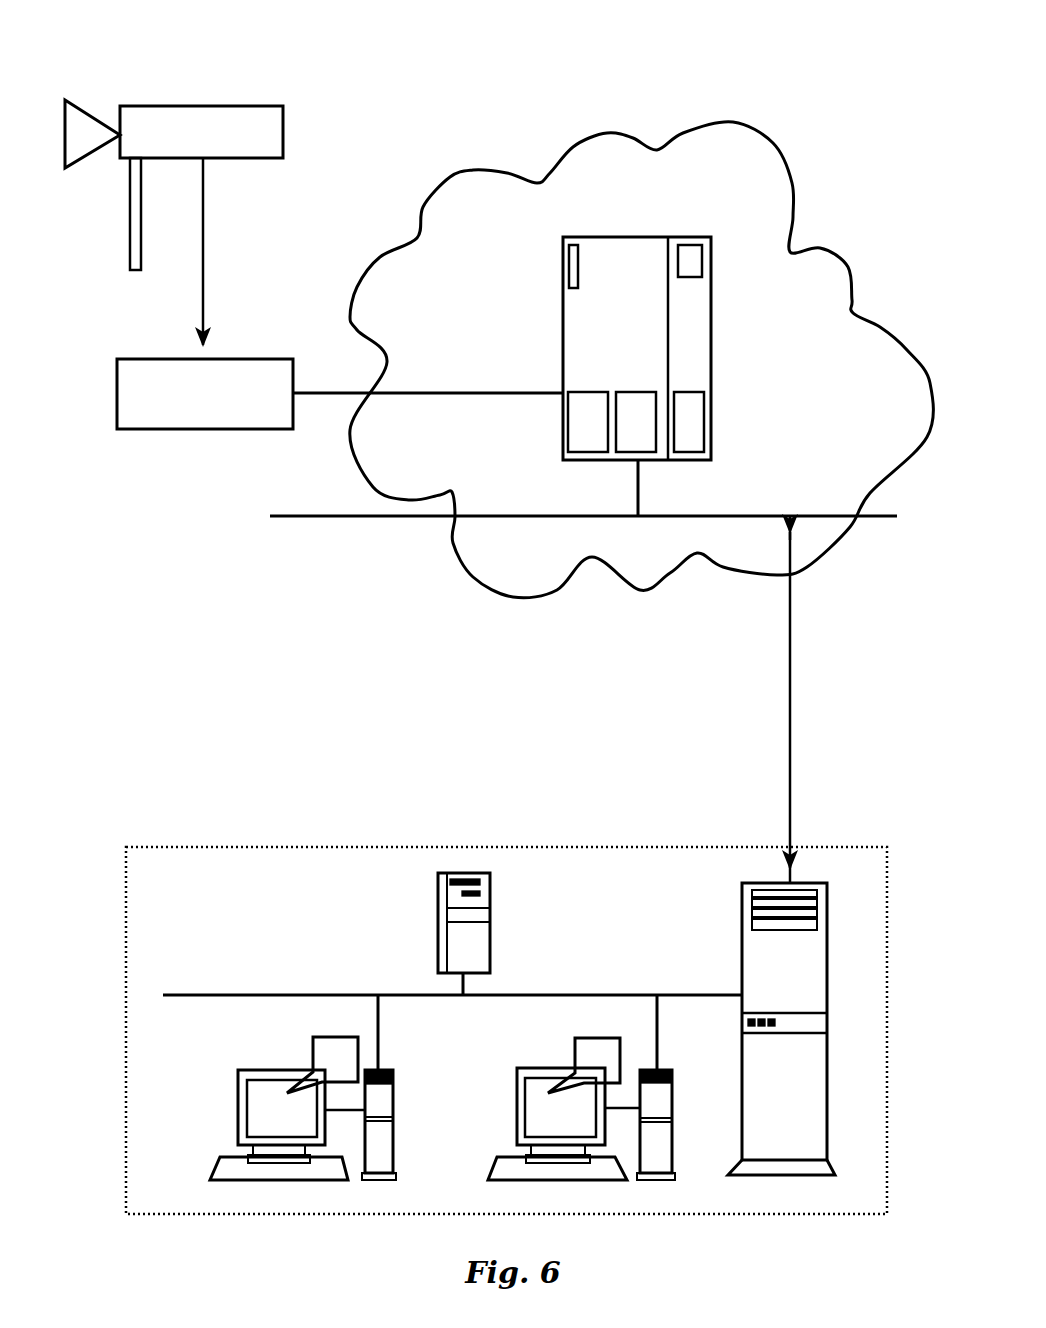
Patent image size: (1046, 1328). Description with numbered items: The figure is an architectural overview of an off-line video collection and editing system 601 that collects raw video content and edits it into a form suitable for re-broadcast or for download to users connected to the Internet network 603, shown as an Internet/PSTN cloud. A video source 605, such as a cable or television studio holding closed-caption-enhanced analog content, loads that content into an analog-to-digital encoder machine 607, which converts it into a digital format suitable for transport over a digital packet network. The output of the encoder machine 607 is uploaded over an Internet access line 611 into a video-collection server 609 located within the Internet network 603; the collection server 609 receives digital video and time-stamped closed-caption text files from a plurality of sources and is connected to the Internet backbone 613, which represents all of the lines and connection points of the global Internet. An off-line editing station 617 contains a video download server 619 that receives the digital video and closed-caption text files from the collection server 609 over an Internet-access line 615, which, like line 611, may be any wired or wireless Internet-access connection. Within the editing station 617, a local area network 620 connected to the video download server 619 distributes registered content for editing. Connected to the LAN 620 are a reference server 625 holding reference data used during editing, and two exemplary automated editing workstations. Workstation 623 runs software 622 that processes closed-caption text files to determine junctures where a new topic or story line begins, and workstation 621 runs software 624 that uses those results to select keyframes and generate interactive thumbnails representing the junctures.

The off-line video collection and editing system 601 is at (205, 630).
The Internet network (Internet/PSTN) 603 is at (633, 138).
The video source 605 is at (206, 107).
The analog-to-digital encoder machine 607 is at (223, 359).
The video-collection server (C-Server) 609 is at (712, 355).
The Internet access line 611 is at (500, 393).
The Internet backbone 613 is at (350, 516).
The Internet-access line 615 is at (790, 725).
The off-line editing station 617 is at (470, 828).
The video download server (VDS) 619 is at (742, 968).
The local area network (LAN) 620 is at (308, 995).
The editing workstation 621 is at (497, 1117).
The software (SW) 622 is at (290, 1053).
The editing workstation 623 is at (222, 1118).
The software (SW) 624 is at (560, 1055).
The reference server (RS) 625 is at (490, 940).